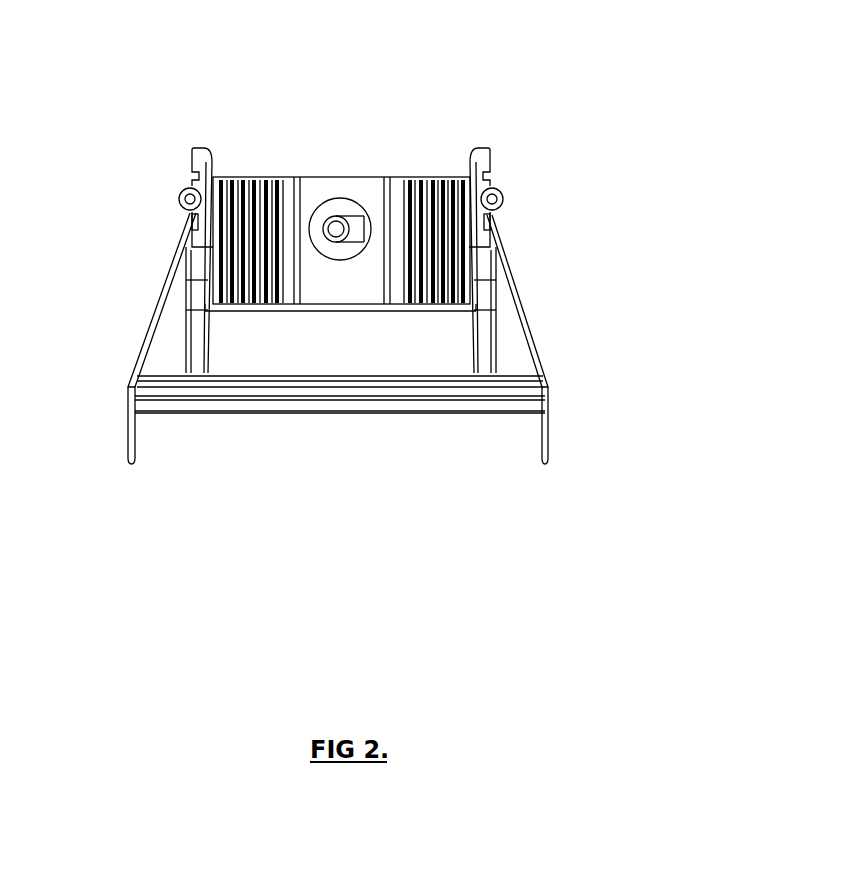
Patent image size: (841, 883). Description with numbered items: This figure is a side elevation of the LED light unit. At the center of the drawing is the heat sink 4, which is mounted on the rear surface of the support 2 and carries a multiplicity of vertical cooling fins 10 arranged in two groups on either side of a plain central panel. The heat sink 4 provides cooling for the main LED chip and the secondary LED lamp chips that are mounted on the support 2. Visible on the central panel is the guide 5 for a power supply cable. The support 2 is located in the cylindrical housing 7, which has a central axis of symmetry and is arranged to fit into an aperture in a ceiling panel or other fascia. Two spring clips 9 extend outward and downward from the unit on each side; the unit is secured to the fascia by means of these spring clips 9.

The support 2 is at (397, 260).
The heat sink 4 is at (399, 183).
The guide 5 is at (397, 167).
The housing 7 is at (372, 358).
The spring clips 9 is at (370, 338).
The cooling fins 10 is at (260, 178).